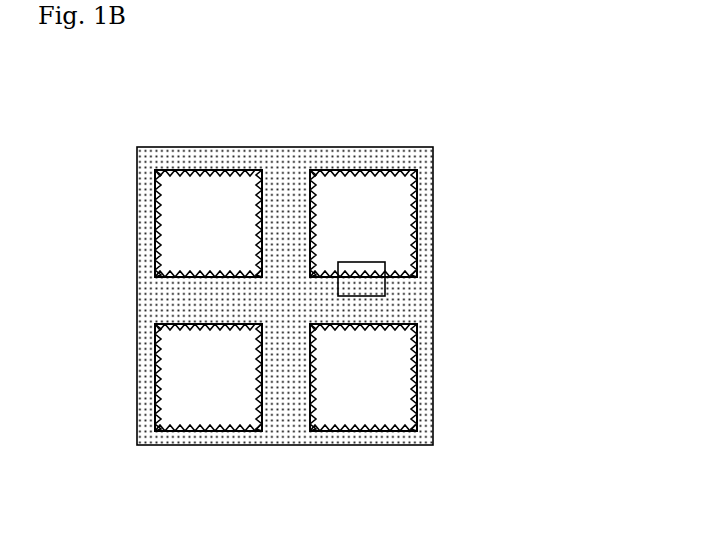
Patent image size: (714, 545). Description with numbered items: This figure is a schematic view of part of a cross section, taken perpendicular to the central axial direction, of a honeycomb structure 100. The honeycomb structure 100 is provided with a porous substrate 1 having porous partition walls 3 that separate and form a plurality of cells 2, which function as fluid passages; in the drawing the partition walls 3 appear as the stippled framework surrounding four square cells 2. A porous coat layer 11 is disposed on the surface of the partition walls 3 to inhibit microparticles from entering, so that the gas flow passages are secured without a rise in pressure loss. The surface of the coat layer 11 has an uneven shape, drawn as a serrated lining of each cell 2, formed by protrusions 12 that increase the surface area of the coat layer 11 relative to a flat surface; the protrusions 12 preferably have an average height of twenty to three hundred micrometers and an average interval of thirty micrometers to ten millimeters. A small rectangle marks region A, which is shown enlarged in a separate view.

The honeycomb structure 100 is at (587, 105).
The porous substrate 1 is at (436, 296).
The cells 2 is at (385, 198).
The partition walls 3 is at (285, 415).
The porous coat layer 11 is at (178, 207).
The protrusions 12 is at (200, 425).
The region A is at (363, 262).